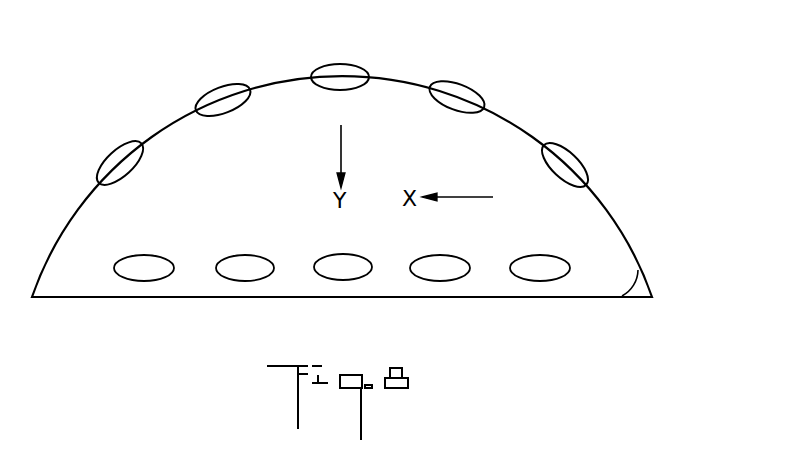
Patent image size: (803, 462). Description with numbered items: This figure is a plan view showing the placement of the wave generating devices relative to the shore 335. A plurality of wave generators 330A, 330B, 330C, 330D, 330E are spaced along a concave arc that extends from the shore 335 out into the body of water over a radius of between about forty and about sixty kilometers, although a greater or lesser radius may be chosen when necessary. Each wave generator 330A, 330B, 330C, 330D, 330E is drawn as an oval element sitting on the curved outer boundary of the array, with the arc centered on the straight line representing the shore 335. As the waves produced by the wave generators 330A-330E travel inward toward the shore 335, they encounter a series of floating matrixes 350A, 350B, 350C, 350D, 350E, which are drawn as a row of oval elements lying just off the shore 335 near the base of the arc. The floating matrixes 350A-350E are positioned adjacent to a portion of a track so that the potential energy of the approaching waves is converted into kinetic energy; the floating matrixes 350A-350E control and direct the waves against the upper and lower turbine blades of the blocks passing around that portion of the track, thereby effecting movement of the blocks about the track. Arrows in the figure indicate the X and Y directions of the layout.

The shore 335 is at (640, 273).
The wave generator 330A is at (117, 153).
The wave generator 330B is at (223, 88).
The wave generator 330C is at (348, 72).
The wave generator 330D is at (472, 100).
The wave generator 330E is at (577, 165).
The floating matrix 350A is at (138, 280).
The floating matrix 350B is at (257, 278).
The floating matrix 350C is at (355, 272).
The floating matrix 350D is at (450, 278).
The floating matrix 350E is at (548, 277).